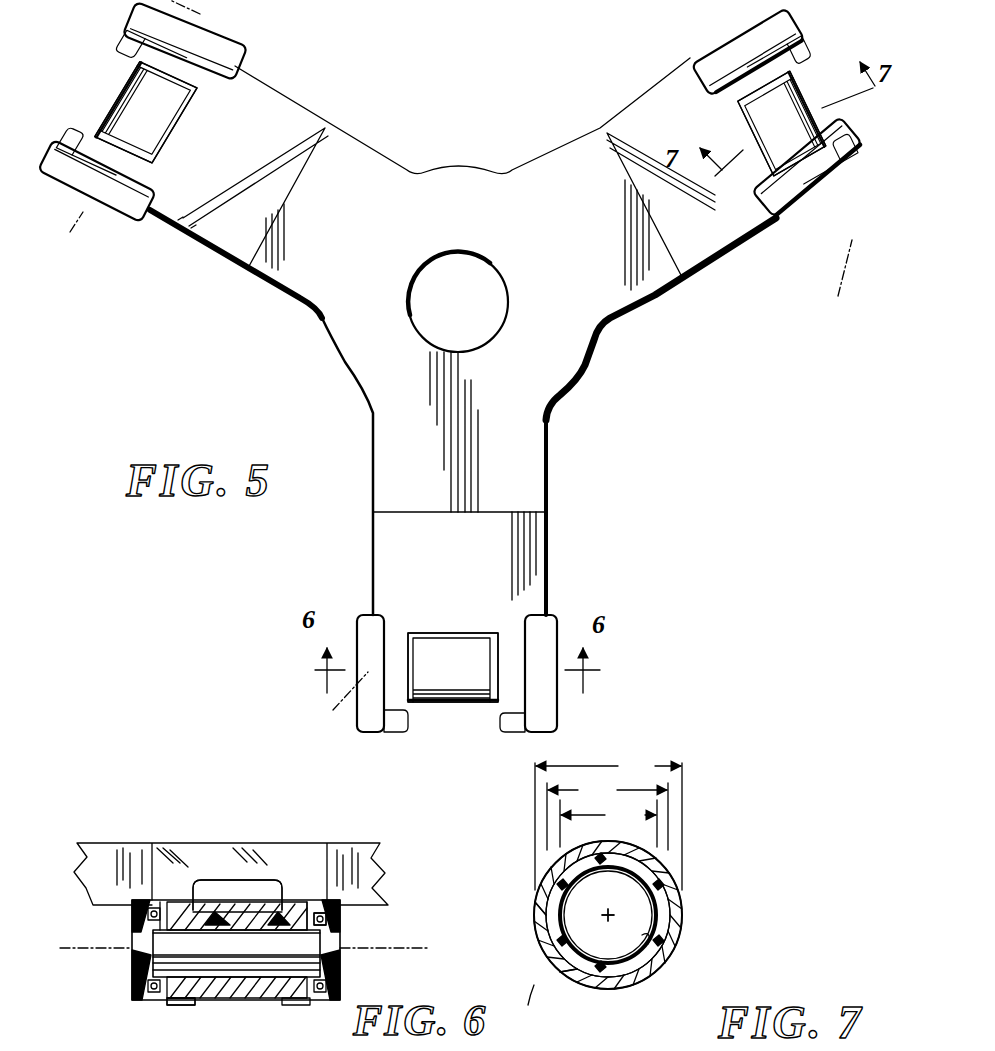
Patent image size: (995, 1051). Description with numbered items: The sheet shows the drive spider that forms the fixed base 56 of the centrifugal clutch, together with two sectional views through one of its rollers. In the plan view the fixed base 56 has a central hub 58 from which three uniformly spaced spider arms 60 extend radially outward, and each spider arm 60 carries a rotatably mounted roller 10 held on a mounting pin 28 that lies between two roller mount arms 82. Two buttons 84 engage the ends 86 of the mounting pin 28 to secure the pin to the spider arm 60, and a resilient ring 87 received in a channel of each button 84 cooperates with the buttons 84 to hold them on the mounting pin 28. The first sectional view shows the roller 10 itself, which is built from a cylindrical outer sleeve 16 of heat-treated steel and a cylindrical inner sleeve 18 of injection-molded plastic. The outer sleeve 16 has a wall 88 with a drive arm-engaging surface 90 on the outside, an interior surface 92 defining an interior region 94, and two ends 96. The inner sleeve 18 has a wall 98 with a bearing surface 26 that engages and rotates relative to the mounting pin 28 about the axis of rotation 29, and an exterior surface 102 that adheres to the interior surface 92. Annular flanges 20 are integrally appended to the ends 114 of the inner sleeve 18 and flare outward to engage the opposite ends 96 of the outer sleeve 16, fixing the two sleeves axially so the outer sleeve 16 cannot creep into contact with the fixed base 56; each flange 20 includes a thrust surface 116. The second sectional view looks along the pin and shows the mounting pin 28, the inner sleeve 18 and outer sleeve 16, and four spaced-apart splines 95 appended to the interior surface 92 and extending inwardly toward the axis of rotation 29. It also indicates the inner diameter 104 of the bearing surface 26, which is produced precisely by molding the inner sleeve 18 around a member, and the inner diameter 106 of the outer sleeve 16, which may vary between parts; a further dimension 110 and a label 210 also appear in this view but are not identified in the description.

In FIG. 5, the roller 10 is at (457, 712).
In FIG. 6, the roller 10 is at (255, 872).
In FIG. 7, the roller 10 is at (672, 968).
In FIG. 5, the cylindrical outer sleeve 16 is at (180, 128).
In FIG. 6, the cylindrical outer sleeve 16 is at (238, 905).
In FIG. 7, the cylindrical outer sleeve 16 is at (685, 912).
In FIG. 7, the cylindrical inner sleeve 18 is at (629, 908).
In FIG. 5, the annular flanges 20 is at (492, 660).
In FIG. 6, the annular flanges 20 is at (270, 902).
In FIG. 6, the bearing surface 26 is at (242, 934).
In FIG. 7, the bearing surface 26 is at (588, 950).
In FIG. 6, the mounting pin 28 is at (153, 955).
In FIG. 7, the mounting pin 28 is at (645, 967).
In FIG. 5, the axis of rotation 29 is at (205, 16).
In FIG. 6, the axis of rotation 29 is at (418, 940).
In FIG. 7, the axis of rotation 29 is at (605, 917).
In FIG. 5, the fixed base 56 is at (618, 424).
In FIG. 5, the central hub 58 is at (462, 262).
In FIG. 5, the spider arms 60 is at (318, 104).
In FIG. 6, the spider arms 60 is at (338, 852).
In FIG. 5, the roller mount arms 82 is at (392, 655).
In FIG. 6, the roller mount arms 82 is at (158, 905).
In FIG. 5, the buttons 84 is at (345, 718).
In FIG. 6, the buttons 84 is at (135, 935).
In FIG. 6, the ends of mounting pin 86 is at (340, 987).
In FIG. 6, the resilient ring 87 is at (335, 918).
In FIG. 6, the wall 88 is at (222, 905).
In FIG. 7, the wall 88 is at (672, 950).
In FIG. 7, the drive arm-engaging surface 90 is at (542, 948).
In FIG. 7, the interior surface 92 is at (632, 930).
In FIG. 7, the interior region 94 is at (560, 903).
In FIG. 7, the splines 95 is at (548, 907).
In FIG. 6, the ends of outer sleeve 96 is at (178, 905).
In FIG. 7, the wall 98 is at (577, 975).
In FIG. 7, the exterior surface 102 is at (548, 932).
In FIG. 7, the inner diameter 104 is at (608, 823).
In FIG. 7, the inner diameter 106 is at (607, 814).
In FIG. 7, the outer diameter 110 is at (608, 822).
In FIG. 6, the ends of inner sleeve 114 is at (205, 912).
In FIG. 5, the thrust surface 116 is at (400, 716).
In FIG. 6, the thrust surface 116 is at (180, 1006).
In FIG. 7, the clutch assembly 210 is at (560, 1018).